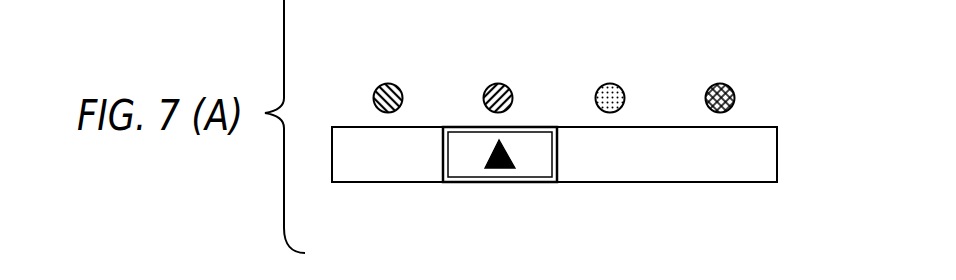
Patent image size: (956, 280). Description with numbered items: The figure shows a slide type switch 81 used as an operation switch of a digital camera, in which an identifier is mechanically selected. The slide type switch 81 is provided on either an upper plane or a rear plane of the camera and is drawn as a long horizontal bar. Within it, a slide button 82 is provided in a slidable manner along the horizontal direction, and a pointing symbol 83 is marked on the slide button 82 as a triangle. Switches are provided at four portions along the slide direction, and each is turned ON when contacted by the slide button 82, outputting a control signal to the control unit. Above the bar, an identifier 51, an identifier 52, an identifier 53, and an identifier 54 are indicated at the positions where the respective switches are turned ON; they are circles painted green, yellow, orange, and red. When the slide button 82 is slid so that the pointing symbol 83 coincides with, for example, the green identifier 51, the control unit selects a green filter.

The identifier 51 is at (415, 58).
The identifier 52 is at (528, 58).
The identifier 53 is at (612, 82).
The identifier 54 is at (723, 82).
The slide type switch 81 is at (777, 153).
The slide button 82 is at (542, 154).
The pointing symbol 83 is at (500, 168).